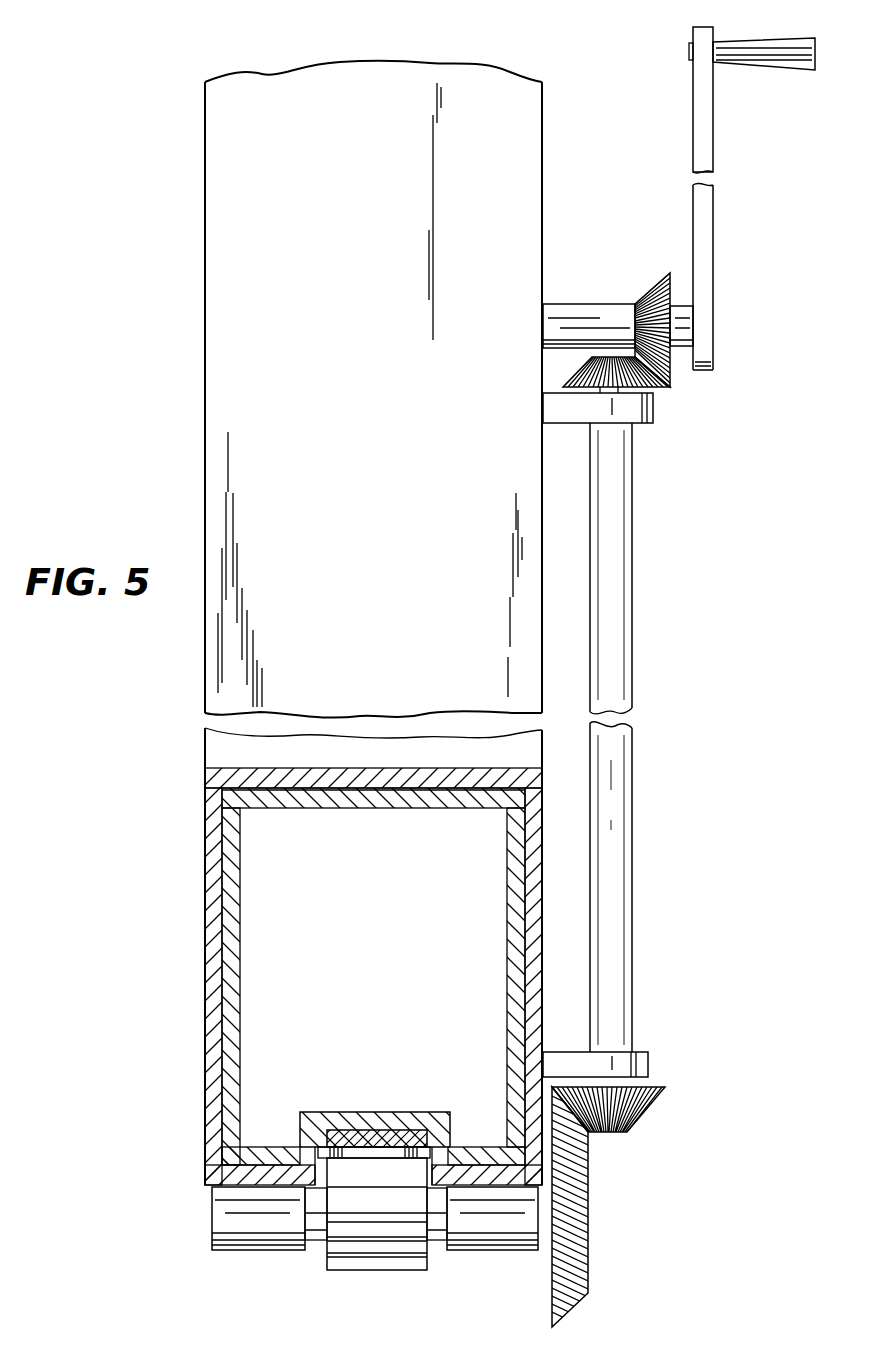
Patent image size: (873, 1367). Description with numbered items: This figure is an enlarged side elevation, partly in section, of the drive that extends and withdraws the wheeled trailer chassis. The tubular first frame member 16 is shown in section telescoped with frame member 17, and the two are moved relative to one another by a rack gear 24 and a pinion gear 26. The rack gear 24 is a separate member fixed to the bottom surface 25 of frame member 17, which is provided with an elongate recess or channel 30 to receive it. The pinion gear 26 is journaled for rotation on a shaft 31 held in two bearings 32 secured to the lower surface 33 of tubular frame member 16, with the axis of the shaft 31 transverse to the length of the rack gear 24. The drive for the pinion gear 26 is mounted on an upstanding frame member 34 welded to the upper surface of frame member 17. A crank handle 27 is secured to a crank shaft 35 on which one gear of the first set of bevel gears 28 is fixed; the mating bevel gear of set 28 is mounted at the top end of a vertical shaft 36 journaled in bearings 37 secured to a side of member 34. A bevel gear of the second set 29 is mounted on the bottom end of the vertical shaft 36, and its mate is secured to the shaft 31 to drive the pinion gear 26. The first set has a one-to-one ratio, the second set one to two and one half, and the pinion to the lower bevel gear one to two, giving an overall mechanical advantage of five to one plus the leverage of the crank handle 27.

The first elongate frame member 16 is at (206, 1060).
The second frame member 17 is at (259, 1073).
The rack gear 24 is at (413, 1133).
The bottom surface 25 is at (283, 1147).
The pinion gear 26 is at (400, 1262).
The crank handle 27 is at (707, 237).
The first set of bevel gears 28 is at (680, 382).
The second set of bevel gears 29 is at (620, 1151).
The channel 30 is at (318, 1126).
The shaft 31 is at (319, 1233).
The bearings 32 is at (262, 1240).
The lower surface 33 is at (205, 1190).
The upstanding frame member 34 is at (394, 410).
The crank shaft 35 is at (685, 333).
The vertical shaft 36 is at (622, 882).
The bearings 37 is at (653, 420).